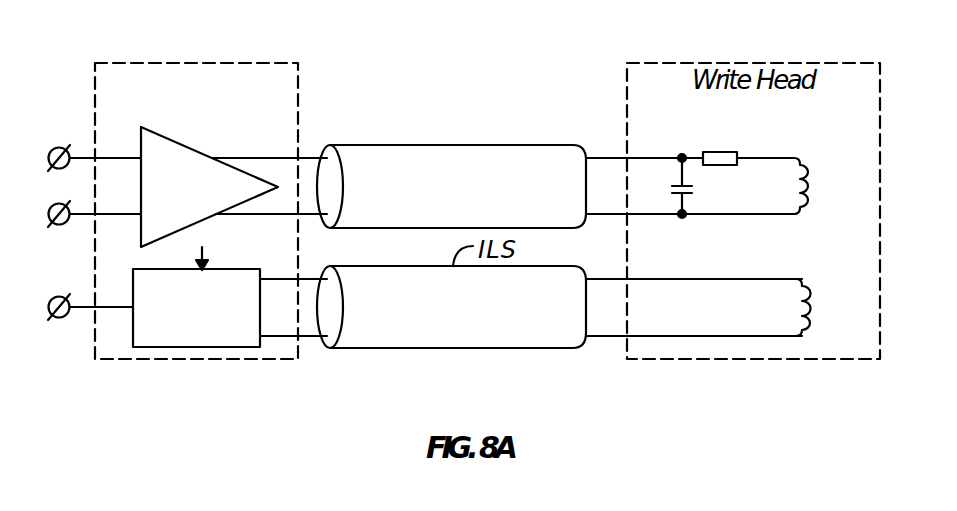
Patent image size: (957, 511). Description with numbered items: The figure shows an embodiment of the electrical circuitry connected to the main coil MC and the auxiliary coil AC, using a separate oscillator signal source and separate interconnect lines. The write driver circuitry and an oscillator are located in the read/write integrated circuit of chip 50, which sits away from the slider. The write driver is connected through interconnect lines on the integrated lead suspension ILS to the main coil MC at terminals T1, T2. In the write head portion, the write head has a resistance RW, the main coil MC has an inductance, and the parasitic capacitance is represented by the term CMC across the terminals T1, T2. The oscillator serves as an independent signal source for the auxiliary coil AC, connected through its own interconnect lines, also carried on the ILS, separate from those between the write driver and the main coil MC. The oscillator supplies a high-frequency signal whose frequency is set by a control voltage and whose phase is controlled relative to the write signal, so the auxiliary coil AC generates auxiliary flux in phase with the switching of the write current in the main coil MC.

The read/write integrated circuit chip 50 is at (119, 63).
The integrated lead suspension ILS is at (453, 145).
The terminal T1 is at (681, 155).
The terminal T2 is at (683, 217).
The parasitic capacitance CMC is at (703, 186).
The write head resistance RW is at (738, 140).
The main coil MC is at (808, 180).
The auxiliary coil AC is at (810, 300).